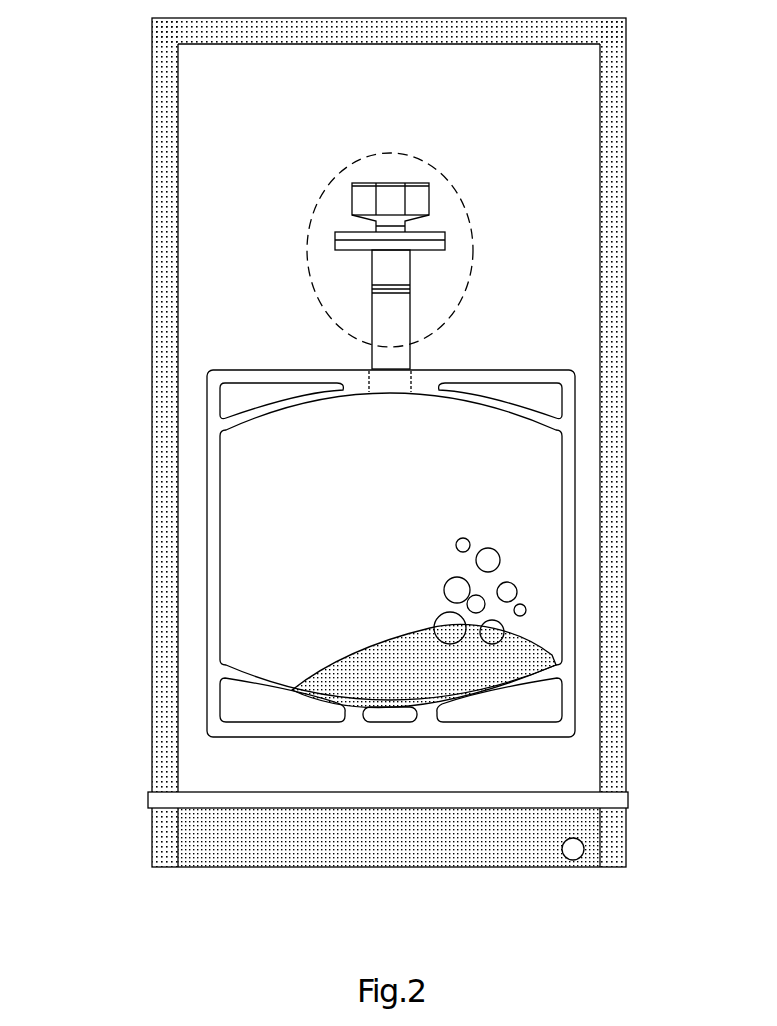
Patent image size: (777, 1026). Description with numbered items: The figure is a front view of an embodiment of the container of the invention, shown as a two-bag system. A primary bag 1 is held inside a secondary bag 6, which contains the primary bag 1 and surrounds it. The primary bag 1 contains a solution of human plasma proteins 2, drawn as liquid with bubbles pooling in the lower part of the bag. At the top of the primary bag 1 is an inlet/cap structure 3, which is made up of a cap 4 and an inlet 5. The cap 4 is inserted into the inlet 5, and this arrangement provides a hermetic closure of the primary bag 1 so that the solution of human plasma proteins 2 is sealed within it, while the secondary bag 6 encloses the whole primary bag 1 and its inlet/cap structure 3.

The primary bag 1 is at (577, 468).
The solution of human plasma proteins 2 is at (493, 620).
The inlet/cap structure 3 is at (307, 232).
The cap 4 is at (430, 197).
The inlet 5 is at (410, 310).
The secondary bag 6 is at (151, 683).